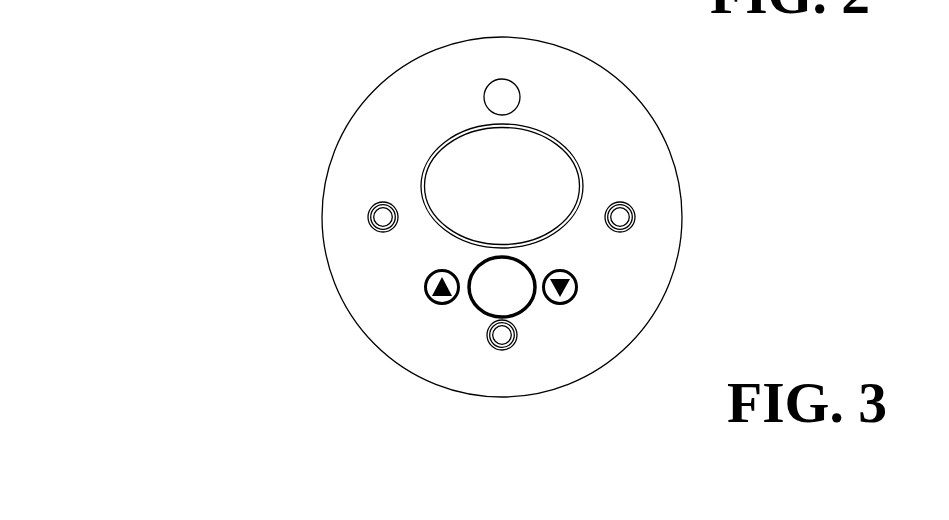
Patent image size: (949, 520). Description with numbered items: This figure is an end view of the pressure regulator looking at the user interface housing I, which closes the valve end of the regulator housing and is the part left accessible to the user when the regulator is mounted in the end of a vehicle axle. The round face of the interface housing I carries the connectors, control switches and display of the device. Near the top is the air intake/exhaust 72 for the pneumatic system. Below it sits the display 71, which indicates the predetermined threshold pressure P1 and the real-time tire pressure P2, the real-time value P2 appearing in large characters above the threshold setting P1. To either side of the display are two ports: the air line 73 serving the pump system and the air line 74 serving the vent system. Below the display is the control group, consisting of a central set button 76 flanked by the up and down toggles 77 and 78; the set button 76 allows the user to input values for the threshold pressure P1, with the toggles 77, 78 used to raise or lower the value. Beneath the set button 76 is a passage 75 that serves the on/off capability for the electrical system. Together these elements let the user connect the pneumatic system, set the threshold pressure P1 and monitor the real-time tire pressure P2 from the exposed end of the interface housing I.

The display 71 is at (573, 157).
The air intake/exhaust 72 is at (489, 84).
The air line 73 is at (635, 221).
The air line 74 is at (368, 220).
The passage 75 is at (497, 348).
The set button 76 is at (477, 308).
The up toggle 77 is at (425, 290).
The down toggle 78 is at (627, 278).
The predetermined threshold pressure P1 is at (582, 197).
The real-time tire pressure P2 is at (447, 167).
The interface housing I is at (736, 193).